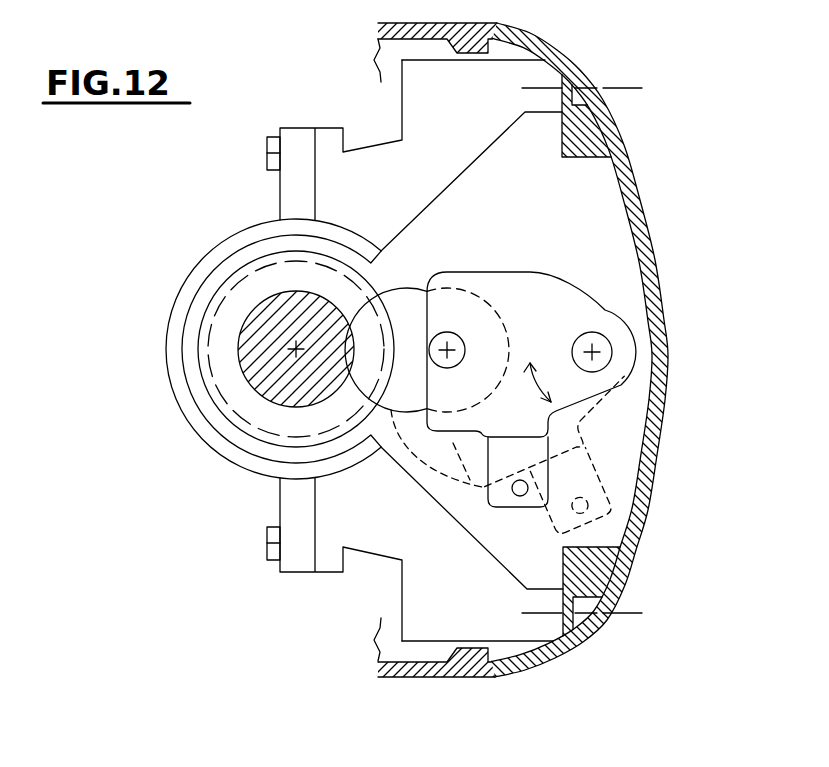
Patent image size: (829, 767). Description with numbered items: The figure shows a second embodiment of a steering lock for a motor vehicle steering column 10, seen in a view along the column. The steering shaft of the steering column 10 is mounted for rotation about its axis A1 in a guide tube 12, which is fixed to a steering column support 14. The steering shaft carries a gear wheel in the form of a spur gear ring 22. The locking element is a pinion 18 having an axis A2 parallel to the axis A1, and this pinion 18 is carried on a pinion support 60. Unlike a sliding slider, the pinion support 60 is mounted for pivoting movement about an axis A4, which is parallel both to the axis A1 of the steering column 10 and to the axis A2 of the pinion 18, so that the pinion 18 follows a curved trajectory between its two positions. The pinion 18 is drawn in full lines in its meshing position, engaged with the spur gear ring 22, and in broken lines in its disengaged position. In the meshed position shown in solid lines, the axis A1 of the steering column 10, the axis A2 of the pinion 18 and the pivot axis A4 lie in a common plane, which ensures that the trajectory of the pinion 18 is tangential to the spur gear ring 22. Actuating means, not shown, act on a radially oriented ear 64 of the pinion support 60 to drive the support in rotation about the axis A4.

The steering column 10 is at (257, 324).
The guide tube 12 is at (227, 248).
The steering column support 14 is at (376, 163).
The pinion 18 is at (398, 298).
The spur gear ring 22 is at (240, 425).
The pinion support 60 is at (530, 304).
The radially oriented ear 64 is at (503, 503).
The axis of the steering column A1 is at (258, 382).
The axis of the pinion A2 is at (458, 340).
The pivot axis of the pinion support A4 is at (608, 339).